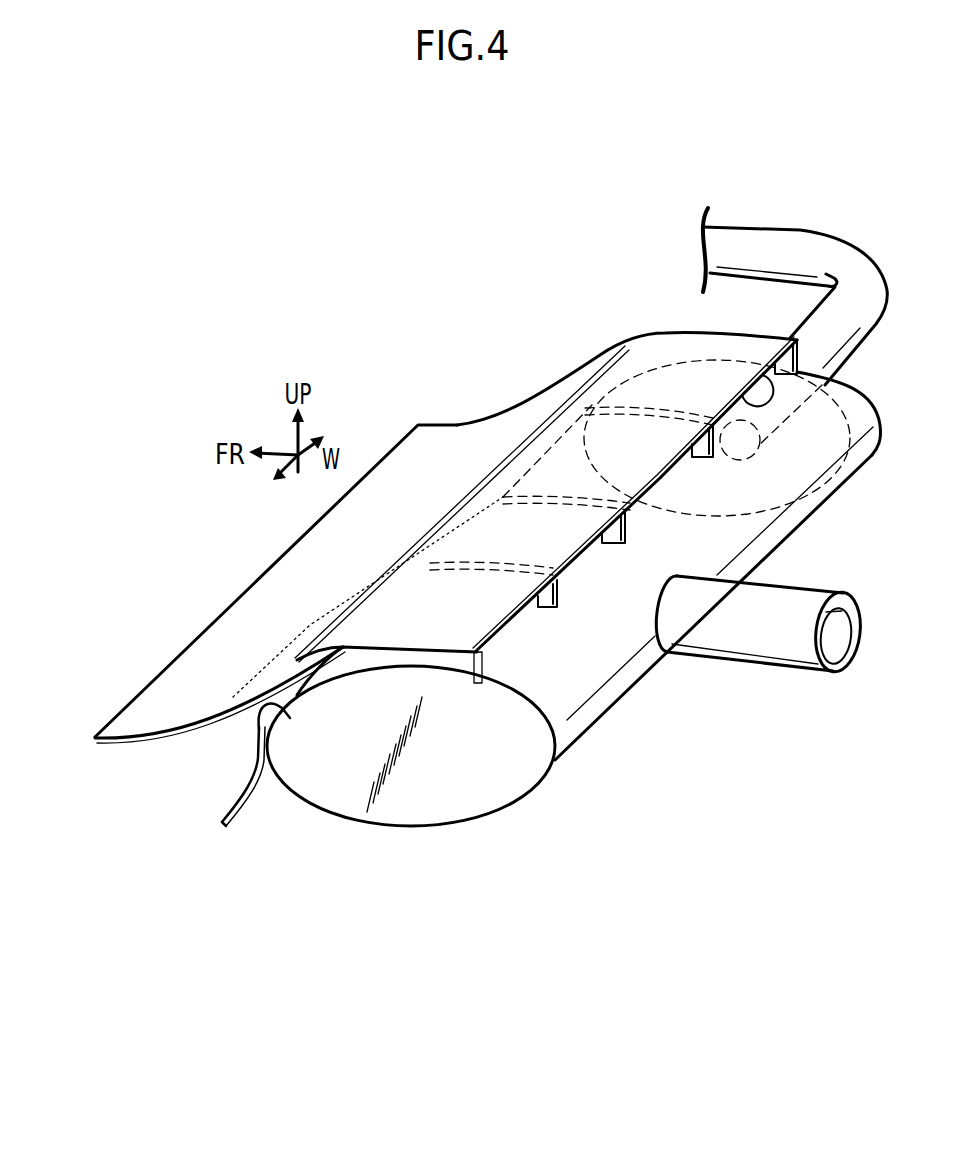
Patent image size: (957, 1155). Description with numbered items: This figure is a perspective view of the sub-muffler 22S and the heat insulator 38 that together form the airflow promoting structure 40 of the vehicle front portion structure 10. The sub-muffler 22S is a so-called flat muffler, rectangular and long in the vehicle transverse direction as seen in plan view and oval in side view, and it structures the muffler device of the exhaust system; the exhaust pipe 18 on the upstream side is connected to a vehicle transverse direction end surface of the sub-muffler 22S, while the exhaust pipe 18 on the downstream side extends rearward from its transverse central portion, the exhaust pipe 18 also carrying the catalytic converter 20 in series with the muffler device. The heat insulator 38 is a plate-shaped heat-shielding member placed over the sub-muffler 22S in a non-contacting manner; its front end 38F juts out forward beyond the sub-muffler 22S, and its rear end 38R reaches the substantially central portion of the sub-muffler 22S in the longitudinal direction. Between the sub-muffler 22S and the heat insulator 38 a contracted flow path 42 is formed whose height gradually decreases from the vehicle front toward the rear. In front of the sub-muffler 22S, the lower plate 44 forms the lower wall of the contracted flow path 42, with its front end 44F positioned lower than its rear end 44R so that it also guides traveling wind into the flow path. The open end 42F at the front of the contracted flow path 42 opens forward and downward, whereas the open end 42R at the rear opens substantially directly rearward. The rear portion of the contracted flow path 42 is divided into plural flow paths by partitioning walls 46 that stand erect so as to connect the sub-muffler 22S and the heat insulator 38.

The vehicle front portion structure 10 is at (557, 471).
The exhaust pipe 18 is at (768, 236).
The catalytic converter 20 is at (528, 746).
The sub-muffler 22S is at (573, 693).
The heat insulator 38 is at (450, 443).
The front end of heat insulator 38F is at (96, 738).
The rear end of heat insulator 38R is at (580, 557).
The airflow promoting structure 40 is at (443, 343).
The contracted flow path 42 is at (232, 839).
The open end at front side of contracted flow path 42F is at (180, 793).
The open end at rear side of contracted flow path 42R is at (740, 400).
The lower plate 44 is at (300, 839).
The front end of lower plate 44F is at (216, 830).
The rear end of lower plate 44R is at (282, 712).
The partitioning walls 46 is at (700, 457).